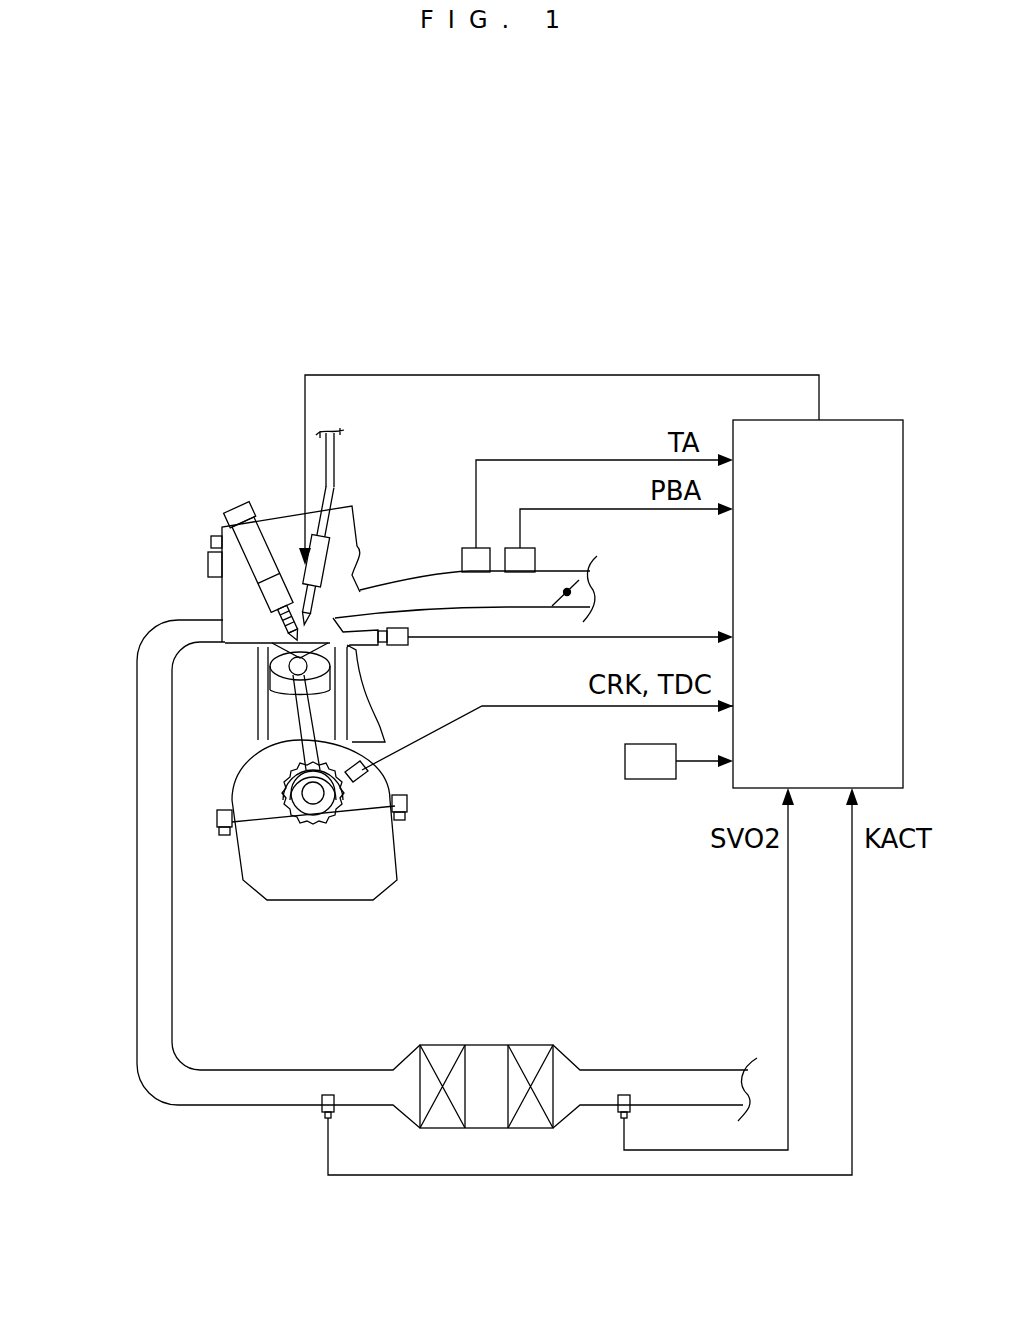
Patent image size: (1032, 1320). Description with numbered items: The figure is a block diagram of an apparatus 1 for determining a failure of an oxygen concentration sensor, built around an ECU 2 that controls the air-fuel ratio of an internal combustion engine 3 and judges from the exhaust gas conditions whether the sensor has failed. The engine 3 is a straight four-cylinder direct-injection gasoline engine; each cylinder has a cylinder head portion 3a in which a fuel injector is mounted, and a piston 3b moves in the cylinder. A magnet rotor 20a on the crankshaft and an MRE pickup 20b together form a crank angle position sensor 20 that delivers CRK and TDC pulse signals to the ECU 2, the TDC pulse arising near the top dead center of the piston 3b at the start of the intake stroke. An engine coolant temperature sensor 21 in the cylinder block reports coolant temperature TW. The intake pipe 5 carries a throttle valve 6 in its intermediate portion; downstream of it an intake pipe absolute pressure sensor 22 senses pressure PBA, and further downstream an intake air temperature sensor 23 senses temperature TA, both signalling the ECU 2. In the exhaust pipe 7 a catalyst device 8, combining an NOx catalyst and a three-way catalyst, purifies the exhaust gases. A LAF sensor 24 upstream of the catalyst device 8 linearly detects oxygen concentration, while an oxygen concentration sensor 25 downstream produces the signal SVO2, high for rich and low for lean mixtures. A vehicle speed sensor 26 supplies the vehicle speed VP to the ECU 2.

The apparatus 1 is at (694, 306).
The ECU 2 is at (856, 421).
The internal combustion engine 3 is at (300, 918).
The cylinder head portion 3a is at (222, 600).
The piston 3b is at (376, 664).
The intake pipe 5 is at (406, 577).
The throttle valve 6 is at (300, 618).
The exhaust pipe 7 is at (185, 1106).
The catalyst device 8 is at (486, 1045).
The crank angle position sensor 20 is at (507, 778).
The magnet rotor 20a is at (345, 812).
The MRE pickup 20b is at (368, 778).
The engine coolant temperature sensor 21 is at (408, 645).
The intake pipe absolute pressure sensor 22 is at (537, 556).
The intake air temperature sensor 23 is at (464, 548).
The LAF sensor 24 is at (321, 1118).
The oxygen concentration sensor 25 is at (618, 1117).
The vehicle speed sensor 26 is at (638, 781).